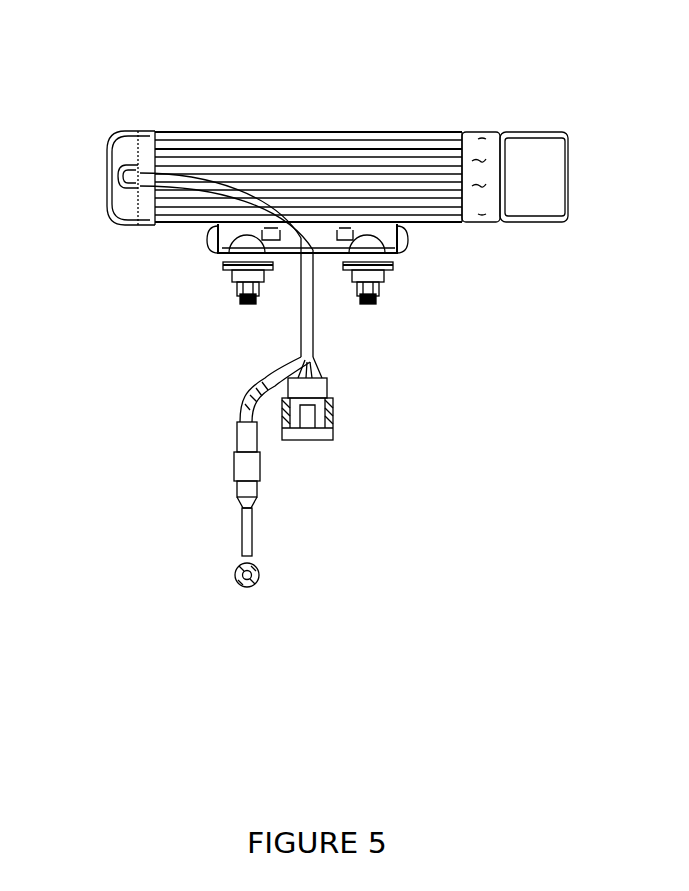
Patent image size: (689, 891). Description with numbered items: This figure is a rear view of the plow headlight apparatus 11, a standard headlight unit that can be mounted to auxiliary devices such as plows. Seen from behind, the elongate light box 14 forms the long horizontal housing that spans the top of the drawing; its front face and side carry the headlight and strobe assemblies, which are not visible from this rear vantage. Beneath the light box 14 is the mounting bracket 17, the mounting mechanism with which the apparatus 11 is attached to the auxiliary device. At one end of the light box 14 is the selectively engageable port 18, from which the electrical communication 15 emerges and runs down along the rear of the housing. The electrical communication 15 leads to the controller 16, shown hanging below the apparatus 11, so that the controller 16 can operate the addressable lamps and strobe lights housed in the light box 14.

The plow headlight apparatus 11 is at (112, 87).
The elongate light box 14 is at (362, 178).
The electrical communication 15 is at (160, 178).
The controller 16 is at (252, 467).
The mounting bracket 17 is at (383, 257).
The selectively engageable port 18 is at (108, 180).